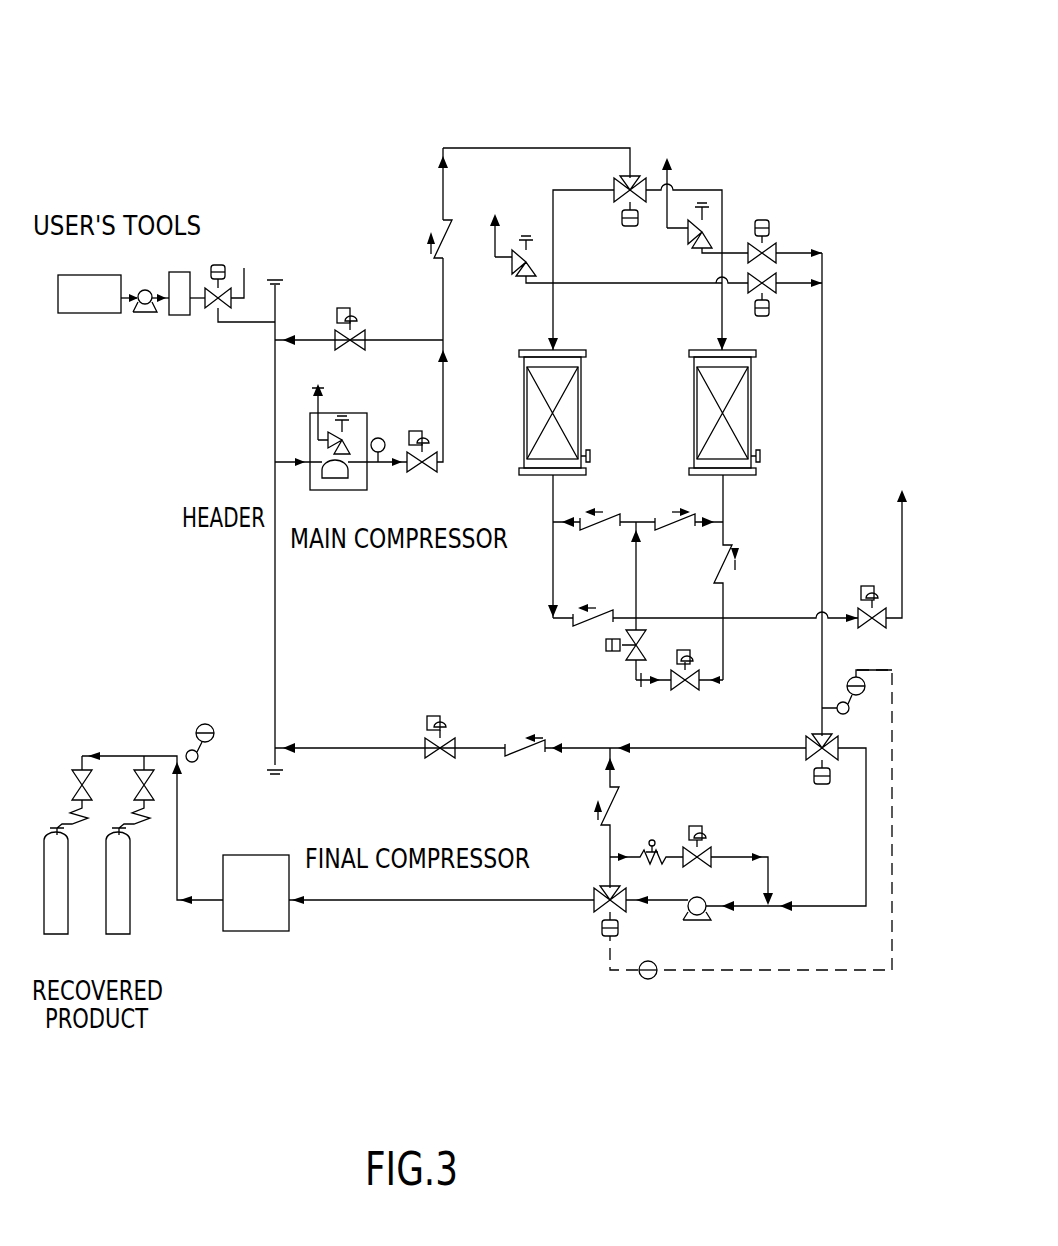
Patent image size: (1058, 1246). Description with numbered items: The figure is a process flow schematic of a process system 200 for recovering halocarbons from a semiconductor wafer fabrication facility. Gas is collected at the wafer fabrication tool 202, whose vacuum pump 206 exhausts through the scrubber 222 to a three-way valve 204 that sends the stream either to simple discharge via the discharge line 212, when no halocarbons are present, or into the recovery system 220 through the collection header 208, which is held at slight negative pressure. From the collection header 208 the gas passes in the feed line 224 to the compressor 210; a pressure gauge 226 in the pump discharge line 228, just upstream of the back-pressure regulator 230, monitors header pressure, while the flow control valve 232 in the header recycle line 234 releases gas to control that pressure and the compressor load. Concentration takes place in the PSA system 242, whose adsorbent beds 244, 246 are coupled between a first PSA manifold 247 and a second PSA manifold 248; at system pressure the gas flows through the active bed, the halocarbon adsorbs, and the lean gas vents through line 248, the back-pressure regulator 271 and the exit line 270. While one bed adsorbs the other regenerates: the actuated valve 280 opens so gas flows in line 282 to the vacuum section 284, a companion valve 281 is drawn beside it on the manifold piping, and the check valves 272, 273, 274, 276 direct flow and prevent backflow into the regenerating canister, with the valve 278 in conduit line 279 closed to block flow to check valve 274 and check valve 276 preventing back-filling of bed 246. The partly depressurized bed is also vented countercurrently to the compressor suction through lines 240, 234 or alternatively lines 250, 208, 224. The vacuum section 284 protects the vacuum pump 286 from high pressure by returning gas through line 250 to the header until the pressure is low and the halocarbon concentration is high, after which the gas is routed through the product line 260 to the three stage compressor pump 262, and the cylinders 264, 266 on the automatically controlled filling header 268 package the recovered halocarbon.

The process system 200 is at (263, 176).
The wafer fabrication tool 202 is at (72, 314).
The three-way valve 204 is at (203, 308).
The vacuum pump 206 is at (148, 290).
The collection header 208 is at (275, 613).
The compressor 210 is at (332, 412).
The discharge line 212 is at (247, 268).
The recovery system 220 is at (503, 70).
The scrubber 222 is at (180, 316).
The feed line 224 is at (270, 462).
The pressure gauge 226 is at (378, 437).
The pump discharge line 228 is at (445, 400).
The back-pressure regulator 230 is at (433, 472).
The flow control valve 232 is at (340, 310).
The header recycle line 234 is at (387, 340).
The line 240 is at (462, 148).
The PSA system 242 is at (745, 126).
The adsorbent bed 244 is at (582, 404).
The adsorbent bed 246 is at (752, 392).
The first PSA manifold 247 is at (708, 190).
The second PSA manifold 248 is at (556, 620).
The line 250 is at (320, 748).
The product line 260 is at (330, 905).
The compressor pump 262 is at (252, 932).
The cylinder 264 is at (70, 912).
The cylinder 266 is at (132, 912).
The filling header 268 is at (128, 753).
The exit line 270 is at (900, 530).
The back-pressure regulator 271 is at (870, 586).
The check valve 272 is at (608, 510).
The check valve 273 is at (591, 632).
The check valve 274 is at (662, 510).
The check valve 276 is at (740, 560).
The valve 278 is at (628, 652).
The conduit line 279 is at (720, 683).
The actuated valve 280 is at (765, 220).
The valve 281 is at (767, 314).
The line 282 is at (825, 440).
The vacuum section 284 is at (840, 1010).
The vacuum pump 286 is at (700, 896).